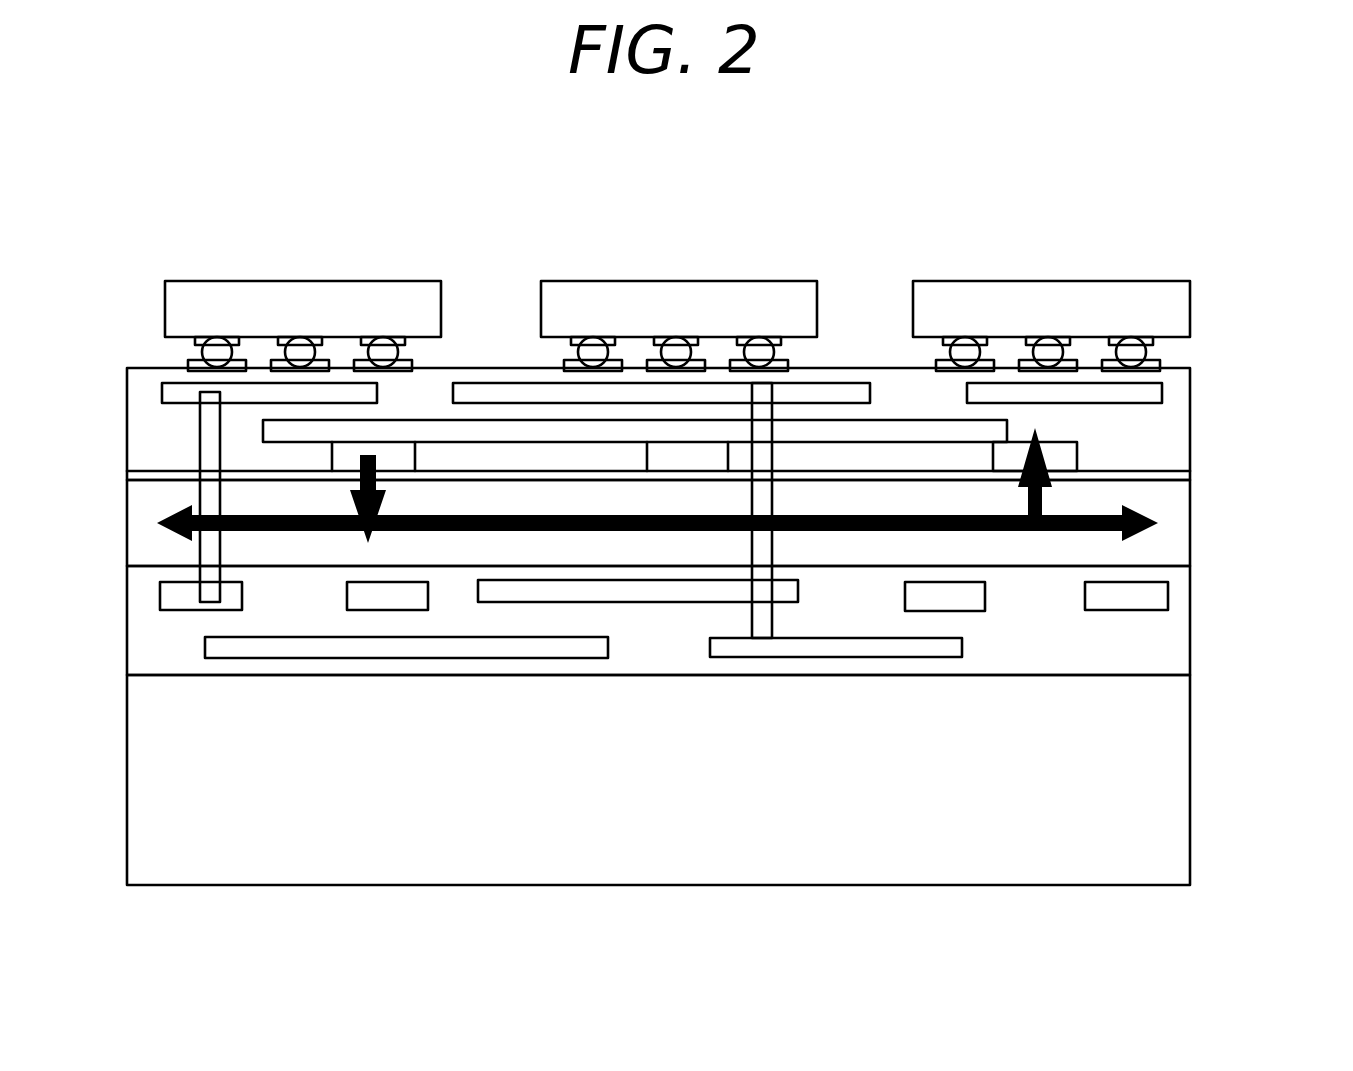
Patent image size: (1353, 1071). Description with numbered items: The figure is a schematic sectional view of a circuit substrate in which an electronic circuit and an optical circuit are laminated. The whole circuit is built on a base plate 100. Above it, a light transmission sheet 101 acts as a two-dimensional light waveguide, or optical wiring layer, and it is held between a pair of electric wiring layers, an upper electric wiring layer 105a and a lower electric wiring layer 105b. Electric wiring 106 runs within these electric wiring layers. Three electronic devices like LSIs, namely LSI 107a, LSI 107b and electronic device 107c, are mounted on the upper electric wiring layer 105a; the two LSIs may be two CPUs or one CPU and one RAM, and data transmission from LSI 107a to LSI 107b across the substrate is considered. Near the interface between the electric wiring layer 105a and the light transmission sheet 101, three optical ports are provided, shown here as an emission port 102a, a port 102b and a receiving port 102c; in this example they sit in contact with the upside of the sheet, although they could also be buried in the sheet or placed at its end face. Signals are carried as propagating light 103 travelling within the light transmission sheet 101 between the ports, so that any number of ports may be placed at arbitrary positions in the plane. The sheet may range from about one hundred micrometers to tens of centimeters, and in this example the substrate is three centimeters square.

The base plate 100 is at (1157, 795).
The light transmission sheet 101 is at (1177, 503).
The emission port 102a is at (405, 452).
The optical port 102b is at (708, 452).
The receiving port 102c is at (1068, 455).
The propagating light 103 is at (314, 510).
The electric wiring layer 105a is at (1177, 448).
The electric wiring layer 105b is at (1157, 645).
The electric wiring 106 is at (1157, 595).
The LSI 107a is at (357, 293).
The LSI 107b is at (703, 292).
The electronic device 107c is at (1072, 292).